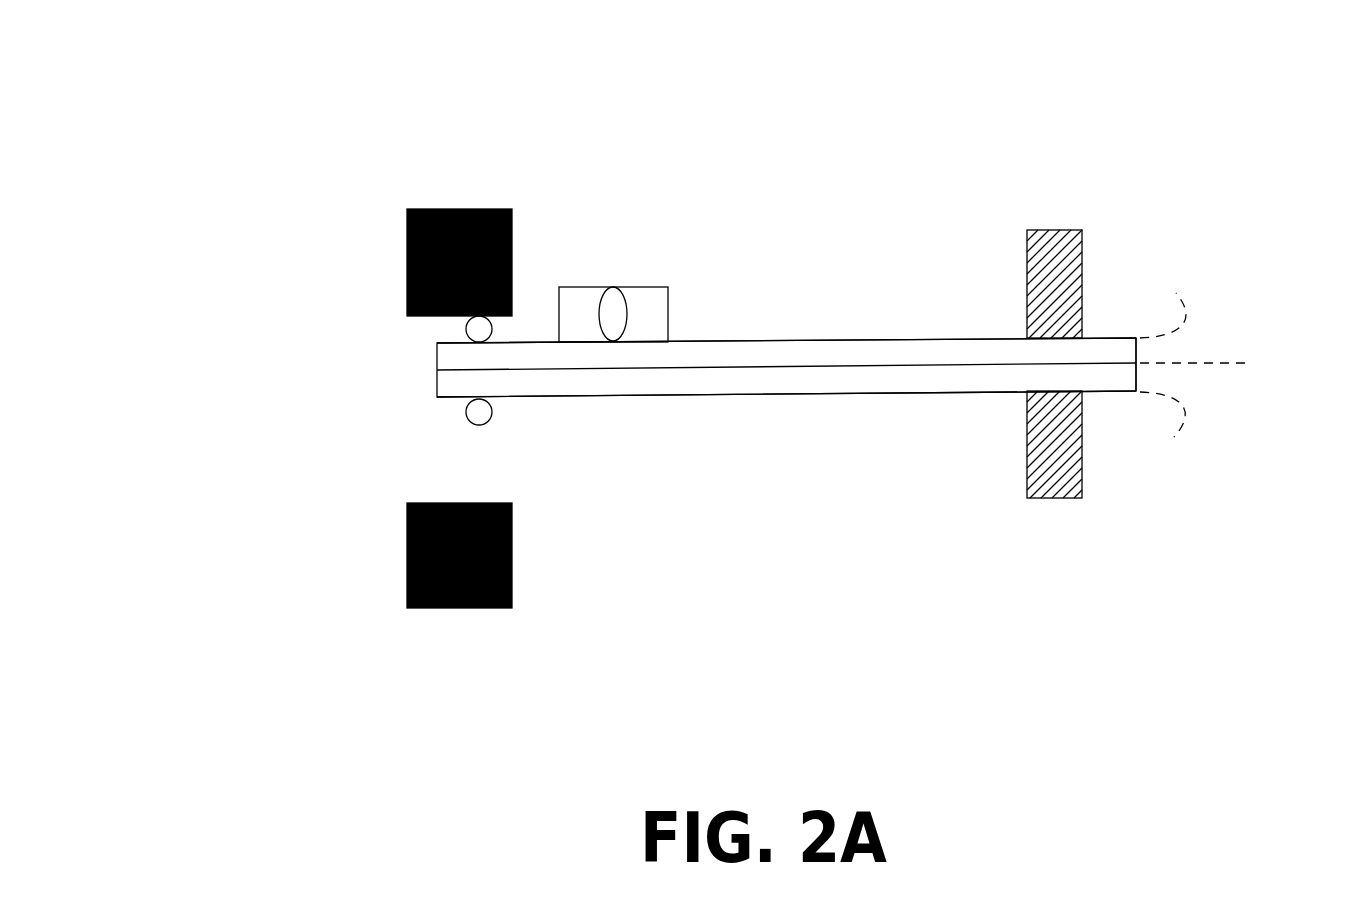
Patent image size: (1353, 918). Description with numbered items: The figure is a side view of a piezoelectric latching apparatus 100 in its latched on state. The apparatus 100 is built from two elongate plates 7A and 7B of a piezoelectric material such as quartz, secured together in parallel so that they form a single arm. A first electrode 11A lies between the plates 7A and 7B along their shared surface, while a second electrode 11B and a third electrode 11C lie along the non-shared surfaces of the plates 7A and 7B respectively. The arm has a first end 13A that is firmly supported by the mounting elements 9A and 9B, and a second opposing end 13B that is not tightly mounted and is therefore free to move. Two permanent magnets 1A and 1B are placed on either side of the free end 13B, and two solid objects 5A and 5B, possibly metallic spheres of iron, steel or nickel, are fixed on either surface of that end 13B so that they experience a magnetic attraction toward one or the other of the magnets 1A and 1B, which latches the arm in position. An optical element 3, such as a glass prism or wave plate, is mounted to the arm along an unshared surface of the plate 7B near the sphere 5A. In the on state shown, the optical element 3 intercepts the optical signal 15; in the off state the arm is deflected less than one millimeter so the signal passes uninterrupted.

The piezoelectric latching apparatus 100 is at (845, 46).
The permanent magnet 1A is at (382, 264).
The permanent magnet 1B is at (382, 558).
The optical element 3 is at (687, 293).
The solid object 5A is at (441, 329).
The solid object 5B is at (441, 412).
The elongate plate 7A is at (813, 418).
The elongate plate 7B is at (813, 316).
The mounting element 9A is at (1054, 206).
The mounting element 9B is at (1054, 522).
The electrode 11A is at (1232, 362).
The second electrode 11B is at (1193, 434).
The third electrode 11C is at (1192, 297).
The first end 13A is at (1136, 416).
The second opposing end 13B is at (412, 370).
The optical signal 15 is at (613, 263).